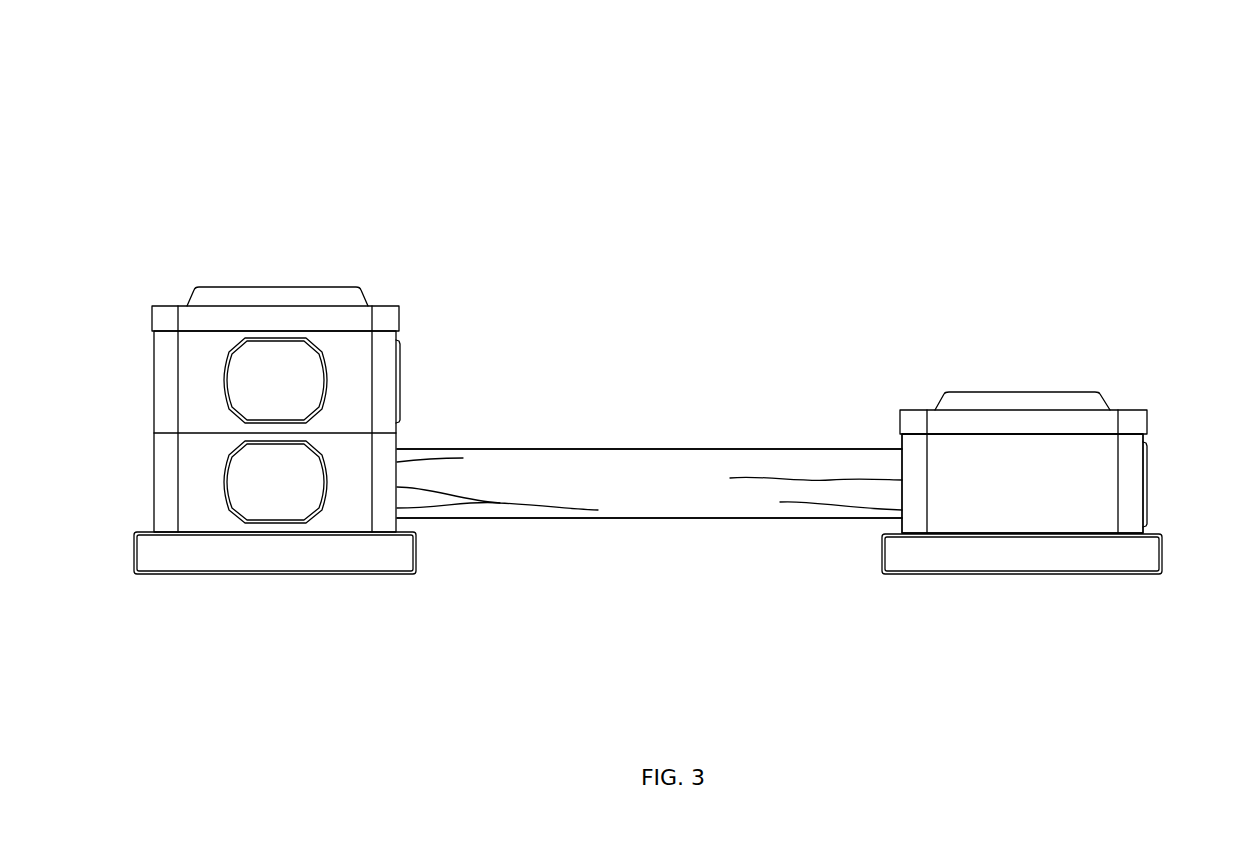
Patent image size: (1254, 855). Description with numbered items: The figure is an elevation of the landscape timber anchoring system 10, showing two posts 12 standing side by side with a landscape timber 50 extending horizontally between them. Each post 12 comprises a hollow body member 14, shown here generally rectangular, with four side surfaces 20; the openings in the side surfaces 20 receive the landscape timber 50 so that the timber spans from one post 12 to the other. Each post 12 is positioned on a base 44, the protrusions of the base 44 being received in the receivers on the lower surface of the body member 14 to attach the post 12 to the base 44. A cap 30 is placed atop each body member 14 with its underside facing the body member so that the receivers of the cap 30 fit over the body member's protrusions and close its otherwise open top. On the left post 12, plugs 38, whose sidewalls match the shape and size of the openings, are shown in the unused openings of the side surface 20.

The landscape timber anchoring system 10 is at (750, 100).
The post 12 is at (145, 367).
The body member 14 is at (1135, 500).
The side surface 20 is at (992, 515).
The cap 30 is at (385, 298).
The plug 38 is at (310, 387).
The base 44 is at (425, 555).
The landscape timber 50 is at (623, 465).